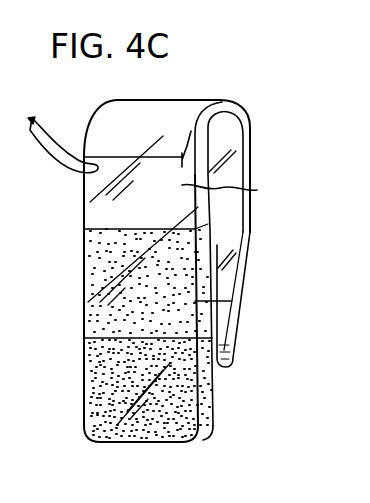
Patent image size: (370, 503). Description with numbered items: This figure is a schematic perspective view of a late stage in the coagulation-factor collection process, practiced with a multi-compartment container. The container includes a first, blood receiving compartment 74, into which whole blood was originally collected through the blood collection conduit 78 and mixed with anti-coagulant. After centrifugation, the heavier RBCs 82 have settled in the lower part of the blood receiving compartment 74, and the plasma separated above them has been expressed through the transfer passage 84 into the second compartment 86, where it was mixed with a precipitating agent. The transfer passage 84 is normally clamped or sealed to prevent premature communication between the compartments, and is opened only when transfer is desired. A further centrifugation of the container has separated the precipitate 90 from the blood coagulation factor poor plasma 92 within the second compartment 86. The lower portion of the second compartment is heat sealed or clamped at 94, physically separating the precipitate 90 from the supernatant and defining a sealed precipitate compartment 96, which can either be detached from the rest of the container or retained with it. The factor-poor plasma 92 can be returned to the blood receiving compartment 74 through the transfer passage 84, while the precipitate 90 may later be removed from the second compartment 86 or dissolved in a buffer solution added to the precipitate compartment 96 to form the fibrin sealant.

The blood receiving compartment 74 is at (85, 319).
The blood collection conduit 78 is at (44, 138).
The RBCs 82 is at (100, 404).
The transfer passage 84 is at (235, 190).
The second compartment 86 is at (252, 160).
The precipitate 90 is at (226, 356).
The blood coagulation factor poor plasma 92 is at (92, 274).
The heat seal or clamp 94 is at (232, 293).
The sealed precipitate compartment 96 is at (238, 320).